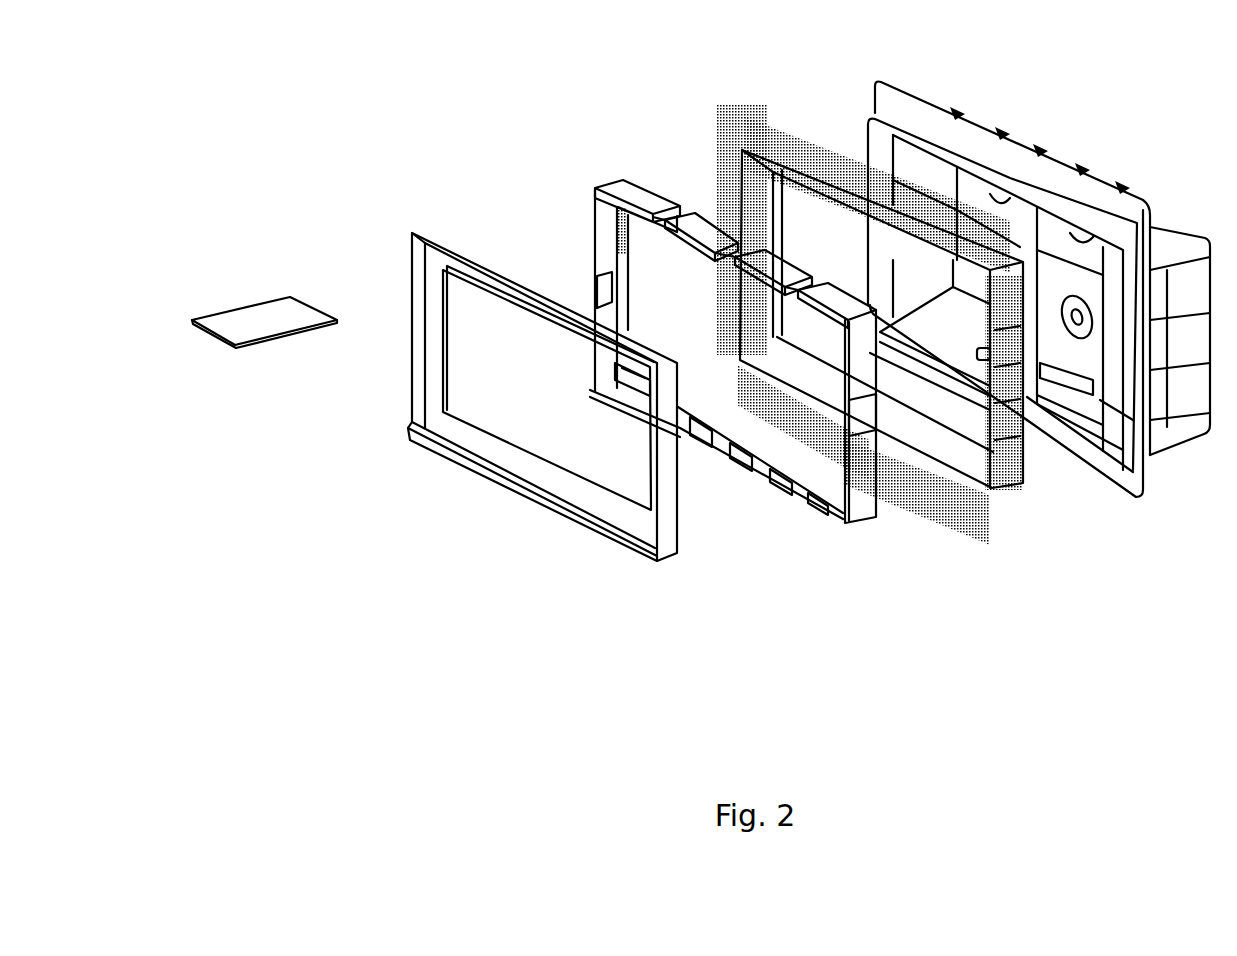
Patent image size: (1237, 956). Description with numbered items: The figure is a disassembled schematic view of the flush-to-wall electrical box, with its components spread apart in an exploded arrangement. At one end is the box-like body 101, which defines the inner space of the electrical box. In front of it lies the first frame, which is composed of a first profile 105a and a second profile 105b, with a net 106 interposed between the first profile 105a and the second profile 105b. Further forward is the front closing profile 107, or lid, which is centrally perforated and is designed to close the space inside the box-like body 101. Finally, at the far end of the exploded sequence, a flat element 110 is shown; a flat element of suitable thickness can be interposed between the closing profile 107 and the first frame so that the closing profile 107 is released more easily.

The box-like body 101 is at (1173, 212).
The first profile 105a is at (590, 228).
The second profile 105b is at (737, 160).
The net 106 is at (752, 124).
The front closing profile 107 is at (412, 403).
The flat element 110 is at (225, 313).